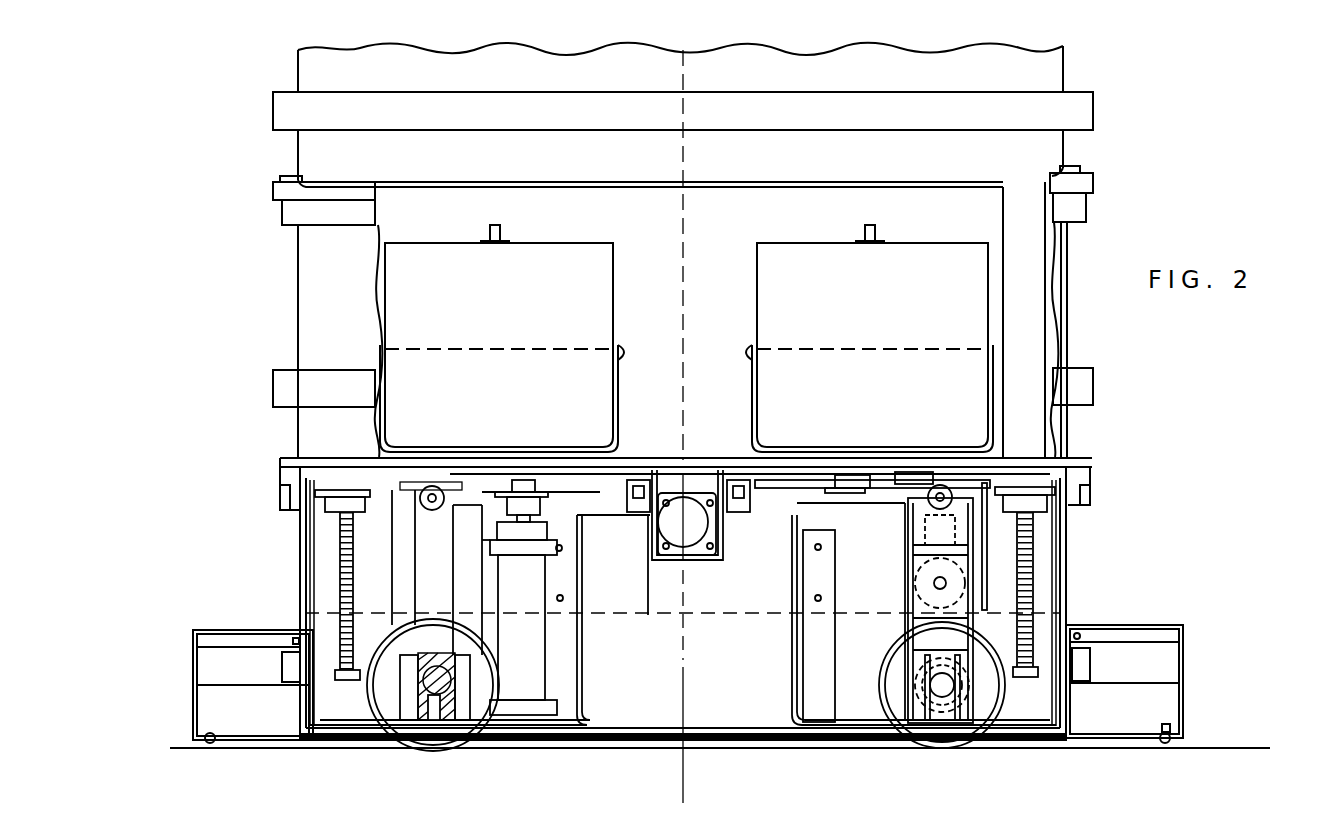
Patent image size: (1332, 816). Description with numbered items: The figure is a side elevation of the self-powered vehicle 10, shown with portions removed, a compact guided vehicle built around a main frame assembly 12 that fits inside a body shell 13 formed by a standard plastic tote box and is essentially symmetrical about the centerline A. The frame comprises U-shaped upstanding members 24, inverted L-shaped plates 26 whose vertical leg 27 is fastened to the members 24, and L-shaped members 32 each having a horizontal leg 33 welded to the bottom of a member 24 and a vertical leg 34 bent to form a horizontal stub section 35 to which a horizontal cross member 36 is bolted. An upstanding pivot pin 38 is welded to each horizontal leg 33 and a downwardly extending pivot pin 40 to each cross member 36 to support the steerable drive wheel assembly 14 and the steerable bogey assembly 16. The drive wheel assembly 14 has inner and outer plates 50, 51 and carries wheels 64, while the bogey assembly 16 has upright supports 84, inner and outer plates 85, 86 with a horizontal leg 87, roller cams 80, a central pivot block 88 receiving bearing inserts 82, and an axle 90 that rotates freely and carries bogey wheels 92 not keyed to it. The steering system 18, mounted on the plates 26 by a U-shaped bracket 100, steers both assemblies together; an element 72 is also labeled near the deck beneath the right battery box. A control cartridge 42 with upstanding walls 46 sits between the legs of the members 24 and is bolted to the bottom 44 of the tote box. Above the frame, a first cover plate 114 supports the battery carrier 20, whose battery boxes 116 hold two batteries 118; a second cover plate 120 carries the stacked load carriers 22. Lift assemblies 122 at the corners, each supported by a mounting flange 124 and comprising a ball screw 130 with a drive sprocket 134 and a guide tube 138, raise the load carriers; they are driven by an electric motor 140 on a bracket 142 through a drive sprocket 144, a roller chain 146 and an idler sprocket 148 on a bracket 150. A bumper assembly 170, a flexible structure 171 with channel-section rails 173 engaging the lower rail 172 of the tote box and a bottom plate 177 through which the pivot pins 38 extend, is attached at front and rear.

The self-powered vehicle 10 is at (1104, 218).
The main frame assembly 12 is at (836, 628).
The body shell 13 is at (1068, 529).
The steerable drive wheel assembly 14 is at (836, 574).
The steerable bogey assembly 16 is at (584, 597).
The steering system 18 is at (672, 560).
The battery carrier 20 is at (1070, 285).
The load carriers 22 is at (1065, 62).
The upstanding members 24 is at (585, 632).
The inverted L-shaped plates 26 is at (340, 580).
The vertical leg 27 is at (914, 610).
The L-shaped members 32 is at (308, 595).
The horizontal leg 33 is at (832, 736).
The vertical leg 34 is at (312, 619).
The horizontal stub section 35 is at (345, 490).
The horizontal cross member 36 is at (428, 482).
The upstanding pivot pin 38 is at (405, 702).
The downwardly extending pivot pin 40 is at (432, 490).
The control cartridge 42 is at (588, 657).
The bottom 44 is at (636, 740).
The upstanding walls 46 is at (583, 685).
The inner plate 50 is at (905, 530).
The outer plate 51 is at (975, 572).
The wheels 64 is at (965, 745).
The mounting plate 72 is at (775, 488).
The roller cams 80 is at (428, 506).
The bearing inserts 82 is at (415, 742).
The upright supports 84 is at (415, 625).
The inner plate 85 is at (453, 603).
The outer plate 86 is at (392, 560).
The horizontal leg 87 is at (578, 492).
The central pivot block 88 is at (440, 712).
The axle 90 is at (448, 675).
The bogey wheels 92 is at (400, 745).
The U-shaped bracket 100 is at (724, 528).
The first cover plate 114 is at (292, 462).
The battery boxes 116 is at (617, 352).
The batteries 118 is at (686, 336).
The second cover plate 120 is at (1093, 178).
The lift assemblies 122 is at (1056, 245).
The mounting flange 124 is at (1040, 458).
The ball screw 130 is at (1032, 612).
The drive sprocket 134 is at (292, 497).
The guide tube 138 is at (1003, 205).
The electric motor 140 is at (545, 590).
The bracket 142 is at (478, 552).
The drive sprocket 144 is at (525, 480).
The roller chain 146 is at (612, 474).
The idler sprocket 148 is at (845, 488).
The bracket 150 is at (900, 476).
The bumper assembly 170 is at (188, 657).
The flexible structure 171 is at (193, 692).
The lower rail 172 is at (282, 670).
The channel-section rails 173 is at (235, 688).
The plate 177 is at (255, 742).
The centerline A is at (690, 775).